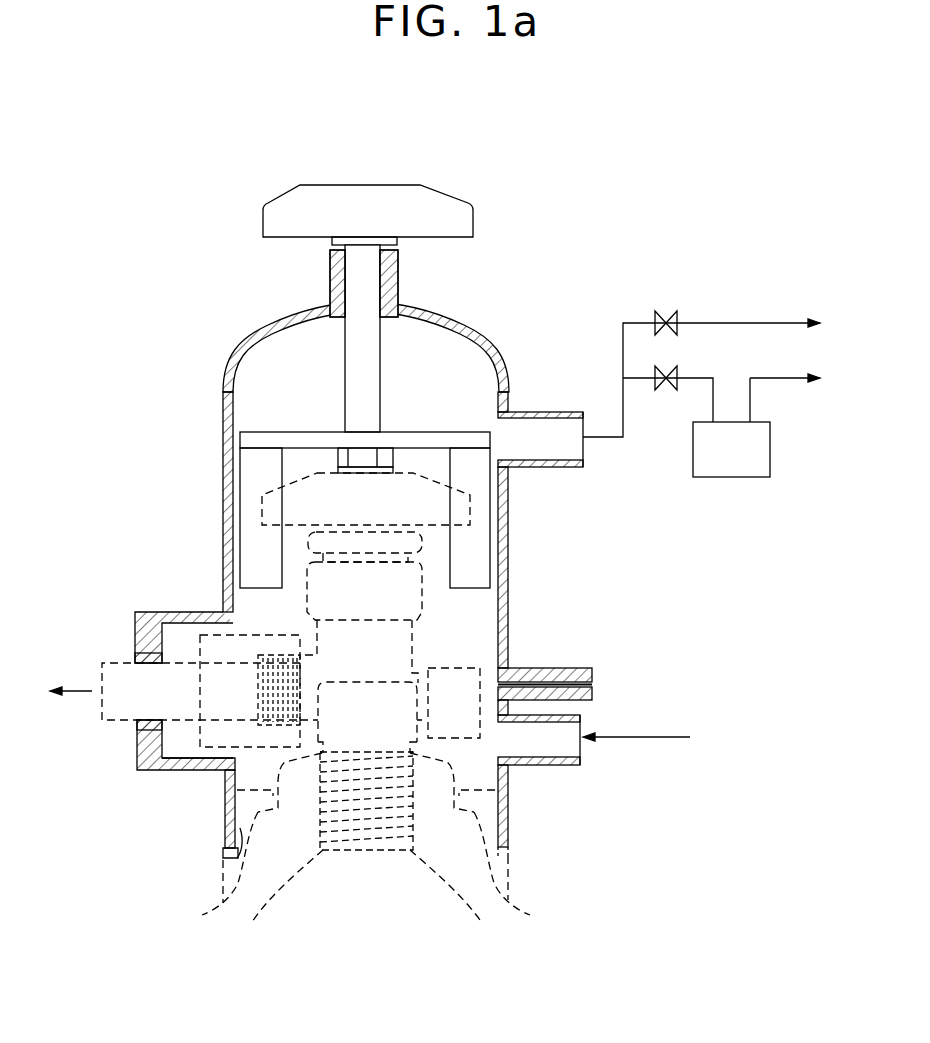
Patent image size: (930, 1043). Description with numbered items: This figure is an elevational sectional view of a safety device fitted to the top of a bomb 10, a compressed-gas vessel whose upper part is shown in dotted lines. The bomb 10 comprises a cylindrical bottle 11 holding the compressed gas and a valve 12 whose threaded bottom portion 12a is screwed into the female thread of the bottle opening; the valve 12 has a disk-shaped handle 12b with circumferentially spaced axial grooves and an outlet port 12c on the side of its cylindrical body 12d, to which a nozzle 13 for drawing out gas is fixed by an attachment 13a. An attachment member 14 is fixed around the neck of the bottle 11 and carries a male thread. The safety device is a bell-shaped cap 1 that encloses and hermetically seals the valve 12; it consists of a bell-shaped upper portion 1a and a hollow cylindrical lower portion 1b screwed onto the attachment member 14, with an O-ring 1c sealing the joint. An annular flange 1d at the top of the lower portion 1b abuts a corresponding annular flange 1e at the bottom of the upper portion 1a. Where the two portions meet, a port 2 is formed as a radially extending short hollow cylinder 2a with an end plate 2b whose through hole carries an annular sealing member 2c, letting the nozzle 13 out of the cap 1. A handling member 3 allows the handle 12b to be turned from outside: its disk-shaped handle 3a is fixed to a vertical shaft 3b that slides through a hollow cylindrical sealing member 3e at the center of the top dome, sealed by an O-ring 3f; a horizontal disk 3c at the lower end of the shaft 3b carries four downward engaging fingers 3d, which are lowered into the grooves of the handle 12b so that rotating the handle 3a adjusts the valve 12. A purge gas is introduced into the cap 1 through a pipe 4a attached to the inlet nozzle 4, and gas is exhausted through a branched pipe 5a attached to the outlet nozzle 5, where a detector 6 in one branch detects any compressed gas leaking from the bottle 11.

The bell-shaped cap 1 is at (512, 340).
The upper portion 1a is at (228, 426).
The lower portion 1b is at (227, 817).
The O-ring 1c is at (508, 850).
The annular flange 1d is at (575, 700).
The annular flange 1e is at (570, 672).
The port 2 is at (168, 658).
The hollow cylinder 2a is at (238, 630).
The end plate 2b is at (133, 642).
The annular sealing member 2c is at (133, 727).
The handling member 3 is at (335, 375).
The disk-shaped handle 3a is at (427, 202).
The shaft 3b is at (347, 360).
The horizontal disk 3c is at (285, 437).
The engaging fingers 3d is at (253, 468).
The hollow cylindrical sealing member 3e is at (337, 280).
The O-ring 3f is at (385, 270).
The purge gas inlet nozzle 4 is at (552, 765).
The pipe 4a is at (662, 738).
The purge gas outlet nozzle 5 is at (558, 410).
The branched pipe 5a is at (623, 415).
The detector 6 is at (727, 480).
The bomb 10 is at (540, 912).
The cylindrical bottle 11 is at (458, 880).
The valve 12 is at (370, 700).
The threaded bottom portion 12a is at (365, 818).
The disk-shaped handle 12b is at (430, 503).
The outlet port 12c is at (268, 655).
The cylindrical body 12d is at (383, 675).
The nozzle 13 is at (190, 668).
The attachment 13a is at (187, 765).
The attachment member 14 is at (226, 857).